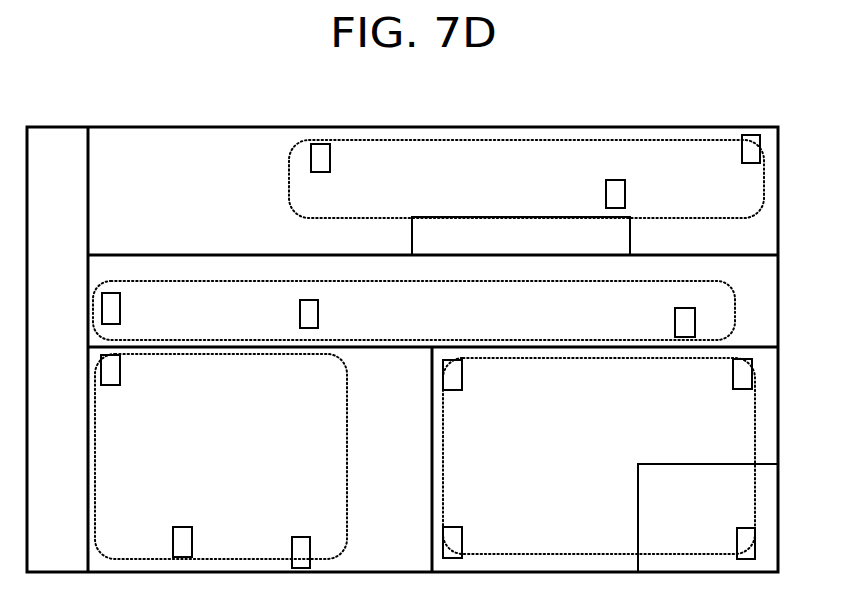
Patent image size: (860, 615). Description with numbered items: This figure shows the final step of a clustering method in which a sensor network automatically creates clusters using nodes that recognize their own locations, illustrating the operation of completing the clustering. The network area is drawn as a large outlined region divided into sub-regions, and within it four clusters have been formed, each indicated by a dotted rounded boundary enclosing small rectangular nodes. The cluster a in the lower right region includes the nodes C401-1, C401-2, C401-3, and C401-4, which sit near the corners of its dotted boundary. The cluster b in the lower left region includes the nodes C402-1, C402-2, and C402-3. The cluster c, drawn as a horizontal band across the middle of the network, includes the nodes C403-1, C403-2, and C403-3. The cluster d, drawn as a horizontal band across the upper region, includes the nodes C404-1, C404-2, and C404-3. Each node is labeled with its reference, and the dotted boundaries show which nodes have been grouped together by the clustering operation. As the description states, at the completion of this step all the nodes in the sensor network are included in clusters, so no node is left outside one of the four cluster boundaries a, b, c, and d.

The node C404-1 is at (311, 153).
The node C404-2 is at (610, 180).
The node C404-3 is at (752, 135).
The node C403-1 is at (678, 308).
The node C403-2 is at (316, 300).
The node C403-3 is at (121, 310).
The node C402-1 is at (297, 537).
The node C402-2 is at (183, 527).
The node C402-3 is at (113, 384).
The node C401-1 is at (742, 390).
The node C401-2 is at (745, 528).
The node C401-3 is at (462, 527).
The node C401-4 is at (447, 375).
The cluster a is at (757, 396).
The cluster b is at (349, 480).
The cluster c is at (737, 315).
The cluster d is at (766, 180).